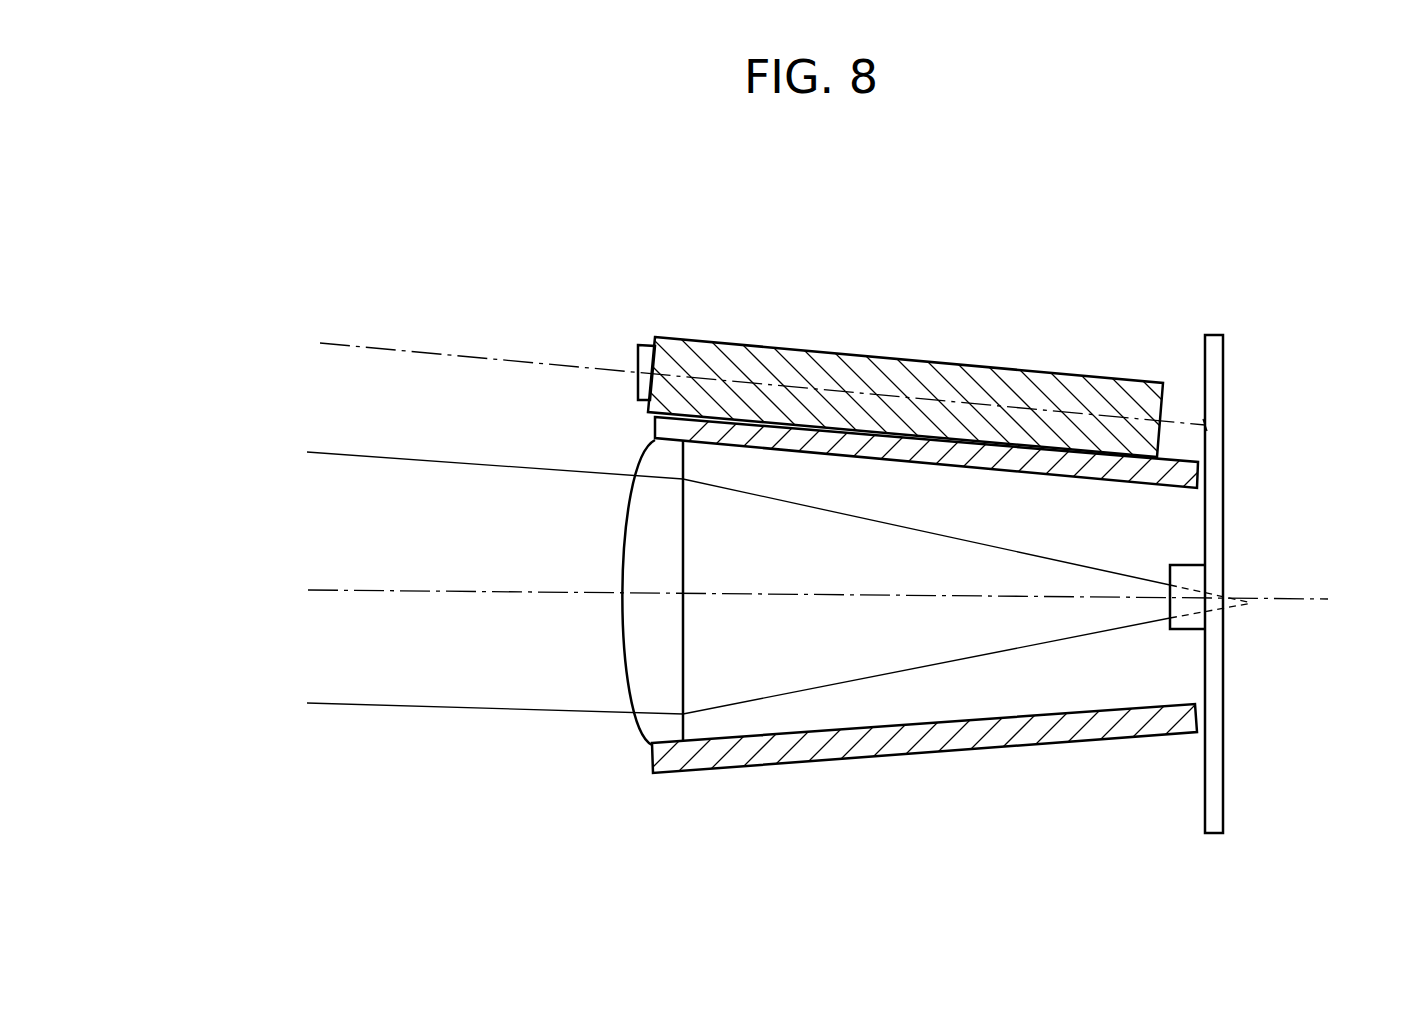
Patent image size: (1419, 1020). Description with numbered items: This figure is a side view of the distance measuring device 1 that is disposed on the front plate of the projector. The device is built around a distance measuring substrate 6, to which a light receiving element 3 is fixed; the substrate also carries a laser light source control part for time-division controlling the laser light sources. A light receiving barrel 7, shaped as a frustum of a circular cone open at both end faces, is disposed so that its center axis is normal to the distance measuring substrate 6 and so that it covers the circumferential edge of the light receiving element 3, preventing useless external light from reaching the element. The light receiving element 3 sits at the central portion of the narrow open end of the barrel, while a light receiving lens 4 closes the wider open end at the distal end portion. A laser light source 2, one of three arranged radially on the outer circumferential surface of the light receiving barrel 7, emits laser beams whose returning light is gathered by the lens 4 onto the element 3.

The distance measuring device 1 is at (1200, 238).
The laser light source 2 is at (977, 378).
The light receiving element 3 is at (1190, 580).
The light receiving lens 4 is at (645, 730).
The distance measuring substrate 6 is at (1216, 383).
The light receiving barrel 7 is at (900, 757).